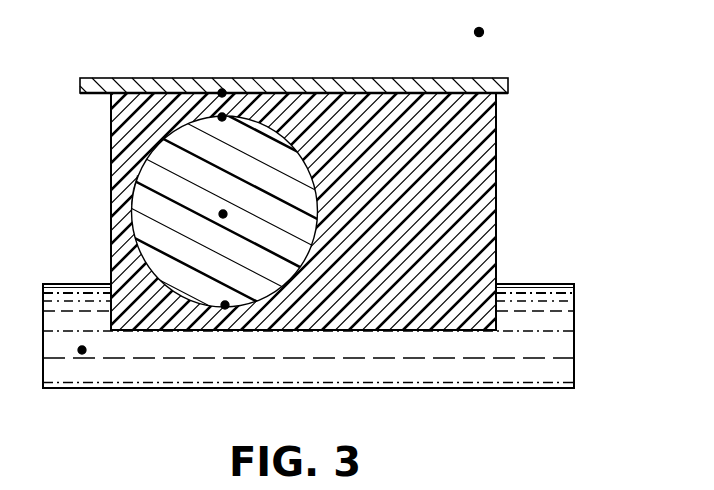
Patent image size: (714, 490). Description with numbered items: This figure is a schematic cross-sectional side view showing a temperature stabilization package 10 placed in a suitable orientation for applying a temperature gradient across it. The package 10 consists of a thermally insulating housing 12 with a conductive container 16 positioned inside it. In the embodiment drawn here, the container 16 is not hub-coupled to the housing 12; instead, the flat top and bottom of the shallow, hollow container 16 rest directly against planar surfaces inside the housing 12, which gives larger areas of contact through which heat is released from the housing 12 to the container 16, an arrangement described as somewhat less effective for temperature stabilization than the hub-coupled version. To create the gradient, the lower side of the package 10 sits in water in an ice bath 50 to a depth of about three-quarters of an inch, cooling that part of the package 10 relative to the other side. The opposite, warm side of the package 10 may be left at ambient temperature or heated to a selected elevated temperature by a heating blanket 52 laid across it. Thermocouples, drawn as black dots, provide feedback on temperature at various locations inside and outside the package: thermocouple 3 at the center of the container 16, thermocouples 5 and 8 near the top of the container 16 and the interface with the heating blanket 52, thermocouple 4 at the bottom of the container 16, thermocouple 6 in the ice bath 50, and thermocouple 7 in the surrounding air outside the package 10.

The thermocouple 3 is at (224, 214).
The thermocouple 4 is at (225, 305).
The thermocouple 5 is at (222, 117).
The thermocouple 6 is at (82, 350).
The thermocouple 7 is at (480, 31).
The thermocouple 8 is at (222, 93).
The temperature stabilization package 10 is at (550, 67).
The thermally insulating housing 12 is at (509, 200).
The conductive container 16 is at (126, 203).
The ice bath 50 is at (455, 367).
The heating blanket 52 is at (367, 78).